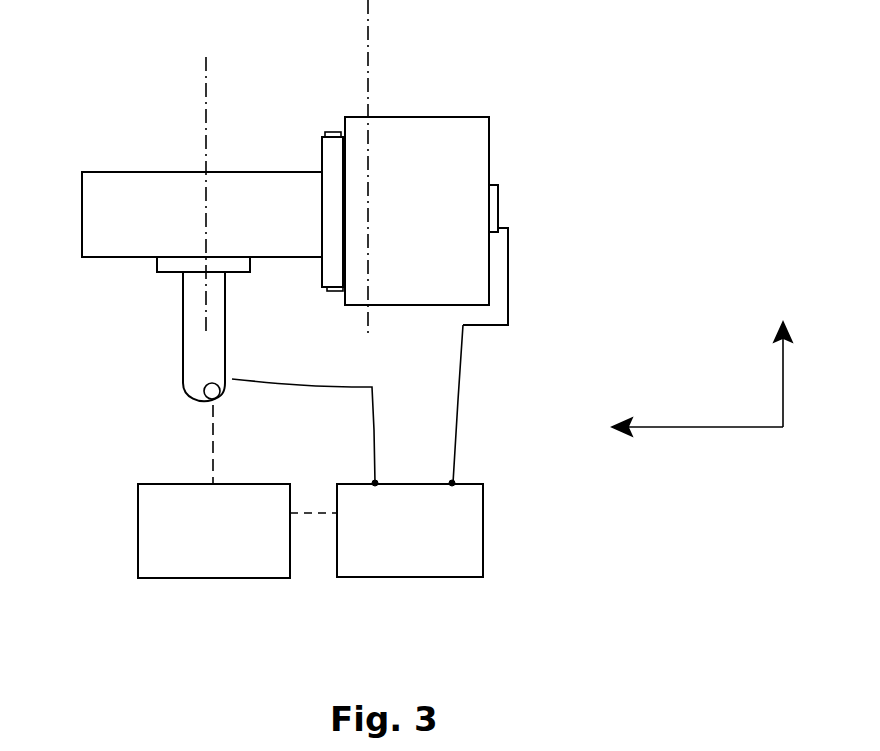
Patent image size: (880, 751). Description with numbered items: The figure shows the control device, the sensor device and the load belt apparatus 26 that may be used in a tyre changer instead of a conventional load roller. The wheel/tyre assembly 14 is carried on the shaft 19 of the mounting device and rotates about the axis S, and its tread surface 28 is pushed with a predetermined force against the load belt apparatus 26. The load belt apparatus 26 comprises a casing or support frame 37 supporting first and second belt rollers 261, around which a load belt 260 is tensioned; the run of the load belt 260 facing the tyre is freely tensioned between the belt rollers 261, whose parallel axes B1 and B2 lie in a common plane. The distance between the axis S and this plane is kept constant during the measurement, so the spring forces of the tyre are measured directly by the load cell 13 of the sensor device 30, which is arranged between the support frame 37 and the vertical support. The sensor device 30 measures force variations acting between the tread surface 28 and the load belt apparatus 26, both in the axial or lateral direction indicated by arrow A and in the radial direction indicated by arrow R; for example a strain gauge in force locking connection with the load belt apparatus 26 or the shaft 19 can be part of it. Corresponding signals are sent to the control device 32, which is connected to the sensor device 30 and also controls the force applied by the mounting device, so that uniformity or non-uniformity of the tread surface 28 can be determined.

The wheel/tyre assembly 14 is at (95, 215).
The tread surface 28 is at (82, 246).
The shaft 19 is at (192, 340).
The load belt 260 is at (320, 148).
The belt roller 261 is at (333, 130).
The load belt apparatus 26 is at (488, 96).
The support frame 37 is at (490, 156).
The load cell 13 is at (500, 207).
The control device 32 is at (206, 572).
The sensor device 30 is at (399, 566).